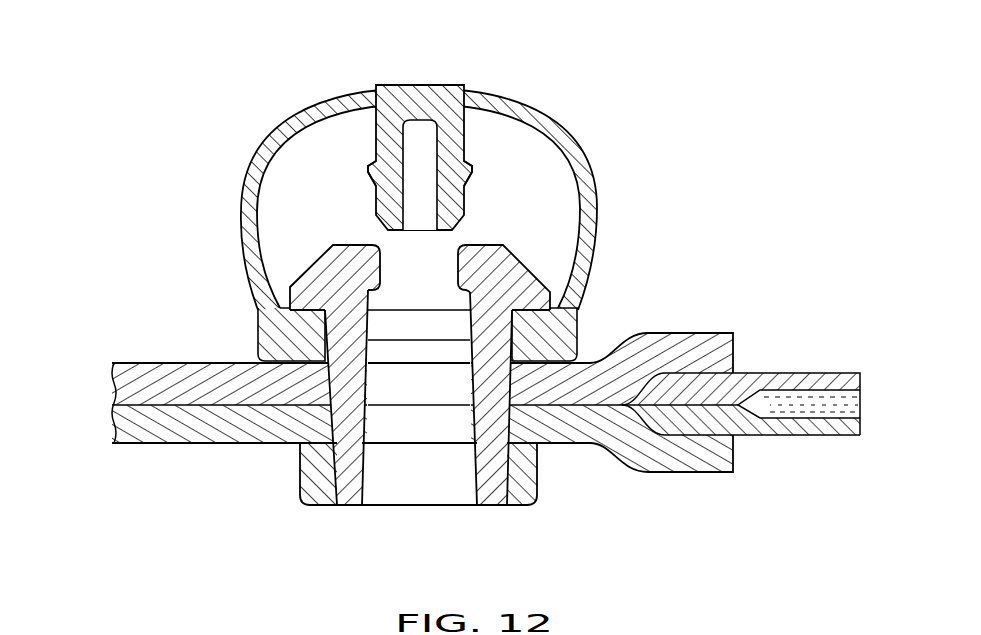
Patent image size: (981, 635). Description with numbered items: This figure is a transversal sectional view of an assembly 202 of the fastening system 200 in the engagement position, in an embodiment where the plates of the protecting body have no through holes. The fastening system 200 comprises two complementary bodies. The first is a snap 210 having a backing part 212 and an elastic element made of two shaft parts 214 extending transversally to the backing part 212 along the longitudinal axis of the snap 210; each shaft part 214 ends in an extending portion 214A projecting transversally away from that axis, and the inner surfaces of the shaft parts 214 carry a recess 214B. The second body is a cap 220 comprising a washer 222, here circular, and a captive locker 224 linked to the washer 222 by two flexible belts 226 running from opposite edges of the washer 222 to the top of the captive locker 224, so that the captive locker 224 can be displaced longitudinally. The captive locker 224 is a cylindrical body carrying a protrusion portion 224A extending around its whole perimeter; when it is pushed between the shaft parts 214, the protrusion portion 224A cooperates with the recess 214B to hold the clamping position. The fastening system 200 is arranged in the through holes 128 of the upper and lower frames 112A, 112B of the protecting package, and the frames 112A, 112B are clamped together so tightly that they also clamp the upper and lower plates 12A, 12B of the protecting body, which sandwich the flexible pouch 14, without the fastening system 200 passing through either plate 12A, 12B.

The fastening system 200 is at (752, 121).
The assembly 202 is at (605, 199).
The snap 210 is at (292, 504).
The backing part 212 is at (422, 487).
The shaft parts 214 is at (353, 330).
The extending portion 214A is at (520, 293).
The recess 214B is at (368, 288).
The cap 220 is at (446, 72).
The washer 222 is at (533, 333).
The captive locker 224 is at (413, 130).
The protrusion portion 224A is at (473, 168).
The belts 226 is at (283, 118).
The upper frame 112A is at (138, 447).
The lower frame 112B is at (128, 375).
The through holes 128 is at (318, 392).
The upper plate 12A is at (807, 427).
The lower plate 12B is at (810, 383).
The flexible pouch 14 is at (848, 404).